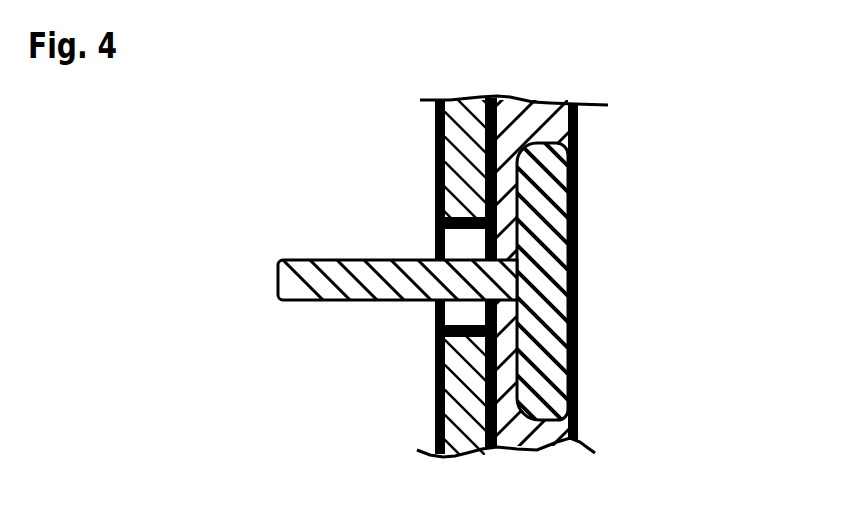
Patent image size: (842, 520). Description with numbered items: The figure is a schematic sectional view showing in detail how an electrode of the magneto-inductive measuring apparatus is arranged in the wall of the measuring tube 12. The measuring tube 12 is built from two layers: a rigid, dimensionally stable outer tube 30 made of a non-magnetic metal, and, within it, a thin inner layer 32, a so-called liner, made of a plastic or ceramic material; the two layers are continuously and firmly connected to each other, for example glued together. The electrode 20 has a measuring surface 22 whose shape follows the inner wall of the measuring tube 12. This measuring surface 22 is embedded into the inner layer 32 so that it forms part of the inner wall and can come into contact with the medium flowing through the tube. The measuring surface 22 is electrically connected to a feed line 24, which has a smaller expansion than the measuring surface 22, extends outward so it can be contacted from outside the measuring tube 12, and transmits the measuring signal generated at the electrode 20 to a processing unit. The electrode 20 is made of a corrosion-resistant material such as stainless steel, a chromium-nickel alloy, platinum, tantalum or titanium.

The measuring tube 12 is at (410, 123).
The electrode 20 is at (451, 266).
The measuring surface 22 is at (571, 165).
The feed line 24 is at (285, 264).
The outer tube 30 is at (455, 380).
The inner layer 32 is at (508, 424).